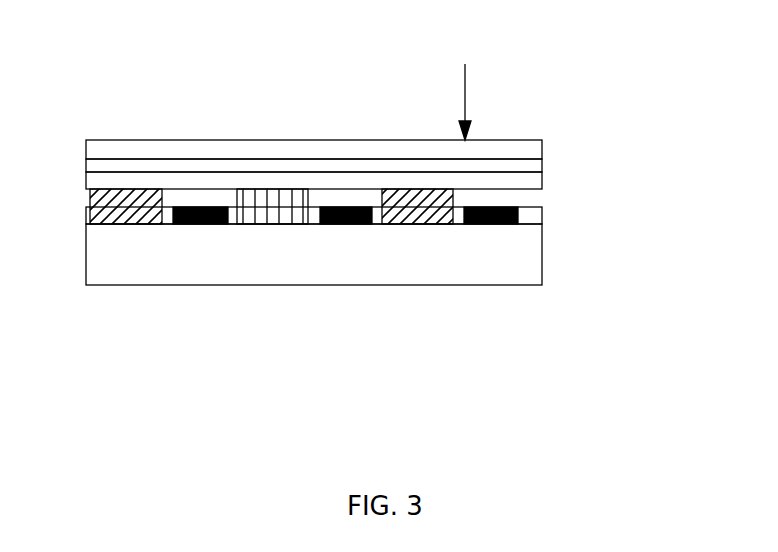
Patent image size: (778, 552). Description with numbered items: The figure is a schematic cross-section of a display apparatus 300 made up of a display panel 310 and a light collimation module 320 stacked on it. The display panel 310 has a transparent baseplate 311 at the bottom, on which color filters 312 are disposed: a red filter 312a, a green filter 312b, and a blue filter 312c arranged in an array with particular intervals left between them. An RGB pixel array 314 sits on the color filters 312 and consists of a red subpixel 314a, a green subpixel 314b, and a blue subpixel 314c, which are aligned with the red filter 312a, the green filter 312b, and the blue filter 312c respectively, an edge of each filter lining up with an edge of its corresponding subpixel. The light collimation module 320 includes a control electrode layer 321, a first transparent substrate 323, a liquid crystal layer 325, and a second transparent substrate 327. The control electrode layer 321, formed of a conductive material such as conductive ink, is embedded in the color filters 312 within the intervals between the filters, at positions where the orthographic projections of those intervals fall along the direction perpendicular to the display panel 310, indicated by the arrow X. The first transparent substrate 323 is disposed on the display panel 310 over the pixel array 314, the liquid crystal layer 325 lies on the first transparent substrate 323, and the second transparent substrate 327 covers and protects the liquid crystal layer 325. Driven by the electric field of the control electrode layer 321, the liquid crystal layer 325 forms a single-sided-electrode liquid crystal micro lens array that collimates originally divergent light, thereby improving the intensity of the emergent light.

The display apparatus 300 is at (397, 24).
The display panel 310 is at (360, 377).
The transparent baseplate 311 is at (92, 283).
The color filters 312 is at (385, 100).
The red filter 312a is at (150, 218).
The green filter 312b is at (265, 205).
The blue filter 312c is at (405, 205).
The RGB pixel array 314 is at (512, 323).
The red subpixel 314a is at (148, 226).
The green subpixel 314b is at (282, 225).
The blue subpixel 314c is at (417, 225).
The light collimation module 320 is at (662, 123).
The control electrode layer 321 is at (537, 213).
The first transparent substrate 323 is at (542, 187).
The liquid crystal layer 325 is at (542, 166).
The second transparent substrate 327 is at (542, 147).